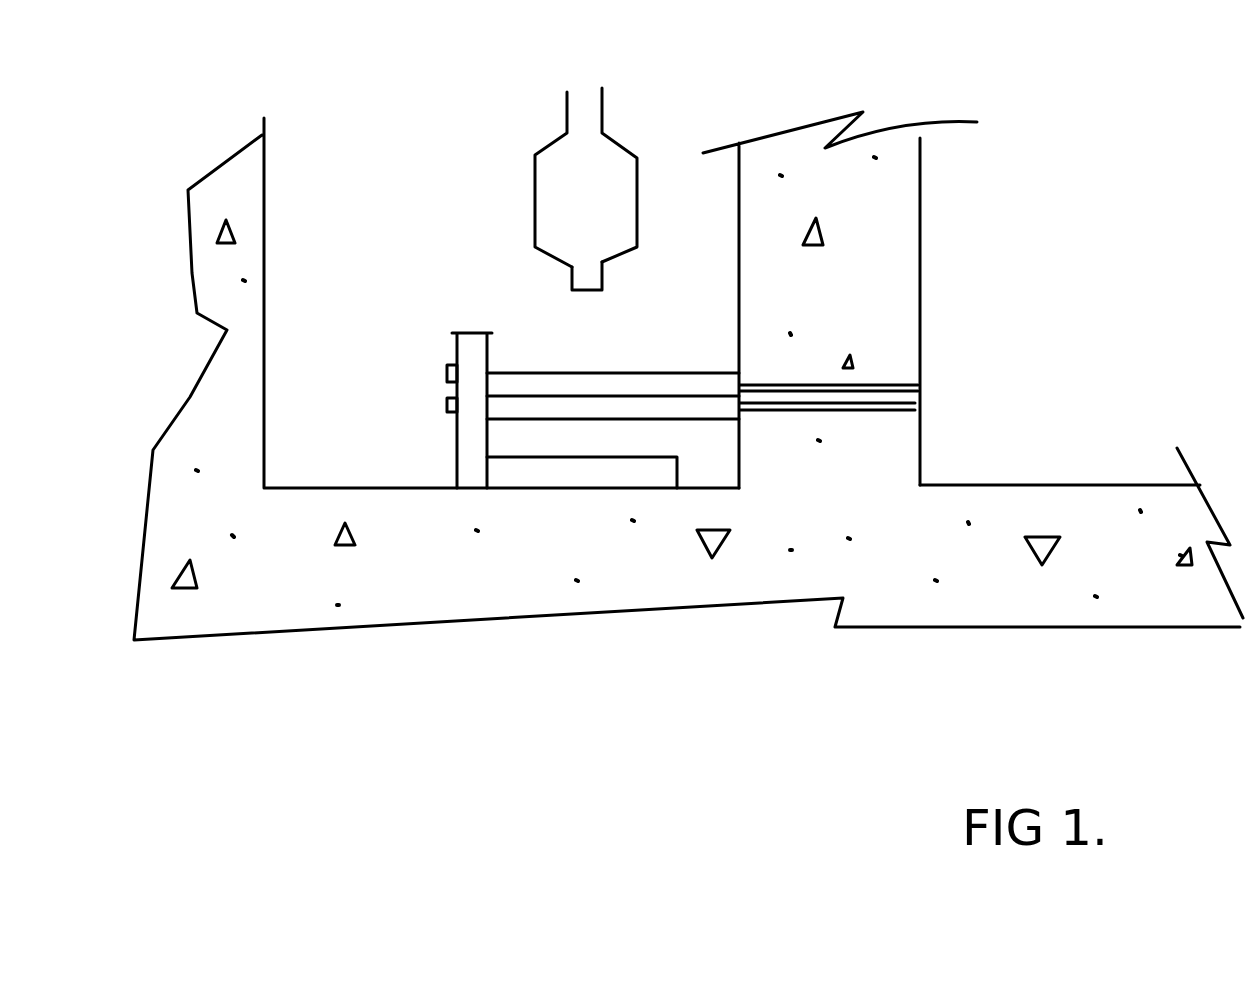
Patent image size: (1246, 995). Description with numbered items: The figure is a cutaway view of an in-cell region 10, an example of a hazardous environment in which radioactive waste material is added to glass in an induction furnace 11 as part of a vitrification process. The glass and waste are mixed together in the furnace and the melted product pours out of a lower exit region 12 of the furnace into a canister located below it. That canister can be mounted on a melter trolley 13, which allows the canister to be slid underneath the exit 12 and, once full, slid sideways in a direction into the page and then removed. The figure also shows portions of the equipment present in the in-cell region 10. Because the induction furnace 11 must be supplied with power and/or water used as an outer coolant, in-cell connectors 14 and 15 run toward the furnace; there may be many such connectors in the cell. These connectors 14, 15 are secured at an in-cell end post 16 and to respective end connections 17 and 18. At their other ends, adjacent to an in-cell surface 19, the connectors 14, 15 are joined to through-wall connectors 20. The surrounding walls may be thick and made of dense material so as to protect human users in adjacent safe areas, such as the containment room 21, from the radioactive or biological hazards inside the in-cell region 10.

The in-cell region 10 is at (385, 165).
The induction furnace 11 is at (597, 218).
The lower exit region 12 is at (566, 277).
The melter trolley 13 is at (568, 487).
The in-cell connector 14 is at (520, 385).
The in-cell connector 15 is at (617, 403).
The in-cell end post 16 is at (472, 347).
The end connection 17 is at (447, 375).
The end connection 18 is at (447, 407).
The in-cell surface 19 is at (737, 218).
The through-wall connectors 20 is at (890, 382).
The containment room 21 is at (1045, 232).